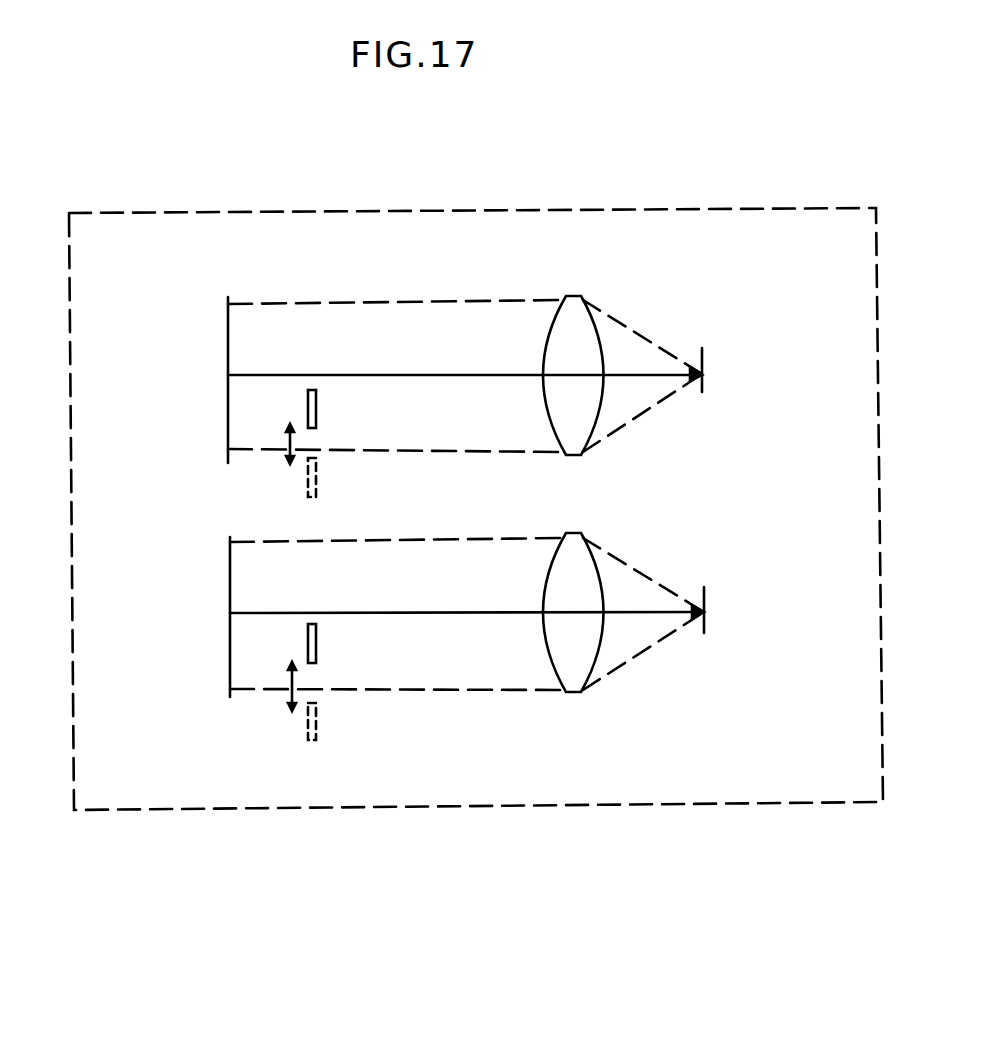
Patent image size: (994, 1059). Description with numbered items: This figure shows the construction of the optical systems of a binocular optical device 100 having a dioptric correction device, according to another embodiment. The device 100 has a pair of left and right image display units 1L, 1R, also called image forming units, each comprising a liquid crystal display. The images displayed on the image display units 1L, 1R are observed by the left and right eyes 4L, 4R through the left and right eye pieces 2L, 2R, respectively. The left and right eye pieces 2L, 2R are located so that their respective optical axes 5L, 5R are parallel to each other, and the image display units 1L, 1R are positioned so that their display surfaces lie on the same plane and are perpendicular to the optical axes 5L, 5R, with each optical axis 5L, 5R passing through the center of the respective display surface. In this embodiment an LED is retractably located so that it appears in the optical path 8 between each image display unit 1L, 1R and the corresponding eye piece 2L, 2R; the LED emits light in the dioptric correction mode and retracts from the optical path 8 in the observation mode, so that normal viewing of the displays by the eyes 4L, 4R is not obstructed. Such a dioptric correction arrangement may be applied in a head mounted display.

The binocular optical device 100 is at (745, 806).
The right image display unit 1R is at (227, 428).
The left image display unit 1L is at (228, 640).
The right eye piece 2R is at (583, 298).
The left eye piece 2L is at (573, 695).
The right eye 4R is at (706, 355).
The left eye 4L is at (708, 592).
The right optical axis 5R is at (450, 377).
The left optical axis 5L is at (443, 616).
The optical path 8 is at (438, 304).